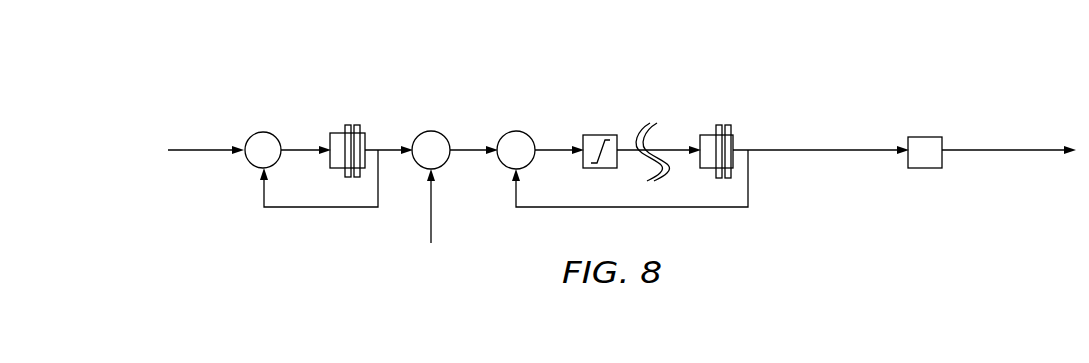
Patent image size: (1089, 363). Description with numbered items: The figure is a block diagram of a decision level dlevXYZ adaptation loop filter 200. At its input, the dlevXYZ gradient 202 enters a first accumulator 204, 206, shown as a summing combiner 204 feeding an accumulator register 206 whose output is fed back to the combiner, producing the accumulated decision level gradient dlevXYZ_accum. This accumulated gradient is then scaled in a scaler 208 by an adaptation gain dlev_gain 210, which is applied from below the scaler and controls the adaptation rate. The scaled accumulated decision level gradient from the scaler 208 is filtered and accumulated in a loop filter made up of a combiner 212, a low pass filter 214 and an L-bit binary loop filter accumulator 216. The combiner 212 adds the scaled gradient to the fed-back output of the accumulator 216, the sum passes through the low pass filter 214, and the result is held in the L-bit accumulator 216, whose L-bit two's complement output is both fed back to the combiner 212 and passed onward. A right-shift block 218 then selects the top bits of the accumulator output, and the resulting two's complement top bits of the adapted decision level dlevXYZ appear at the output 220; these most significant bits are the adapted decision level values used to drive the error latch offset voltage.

The decision level dlevXYZ adaptation loop filter 200 is at (980, 58).
The dlevXYZ gradient 202 is at (213, 151).
The first accumulator 204 is at (275, 131).
The first accumulator 206 is at (367, 132).
The scaler 208 is at (431, 130).
The adaptation gain dlev_gain 210 is at (431, 228).
The combiner 212 is at (532, 165).
The low pass filter 214 is at (602, 168).
The L-bit binary loop filter accumulator 216 is at (700, 138).
The right shifter 218 is at (907, 167).
The dlevXYZ top bits output 220 is at (957, 151).